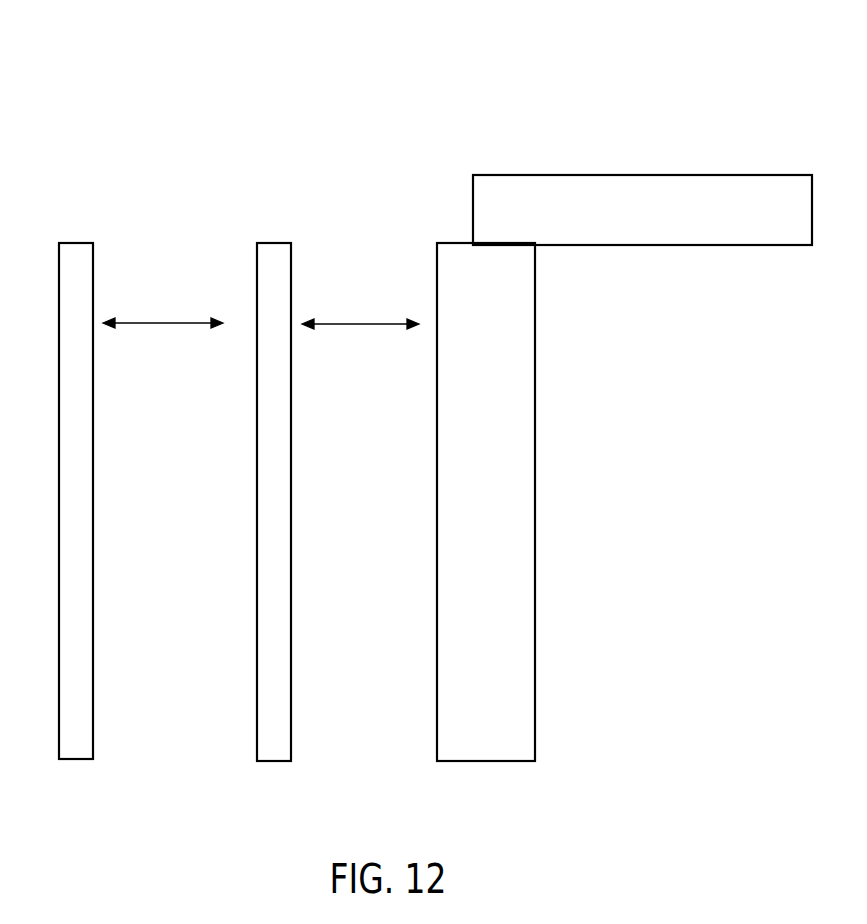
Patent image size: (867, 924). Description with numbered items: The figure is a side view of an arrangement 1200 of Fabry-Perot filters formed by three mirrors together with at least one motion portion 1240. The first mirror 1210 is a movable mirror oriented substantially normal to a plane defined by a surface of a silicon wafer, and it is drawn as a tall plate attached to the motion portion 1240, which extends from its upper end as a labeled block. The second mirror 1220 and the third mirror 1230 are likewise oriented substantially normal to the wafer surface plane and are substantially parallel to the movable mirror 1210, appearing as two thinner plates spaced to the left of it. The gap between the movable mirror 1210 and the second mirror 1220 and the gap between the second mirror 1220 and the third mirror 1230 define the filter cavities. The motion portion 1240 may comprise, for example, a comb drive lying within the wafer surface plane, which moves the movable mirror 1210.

The capacitive sensing arrangement 1200 is at (193, 68).
The first mirror 1210 is at (437, 475).
The second mirror 1220 is at (257, 475).
The third mirror 1230 is at (59, 473).
The motion portion 1240 is at (800, 236).